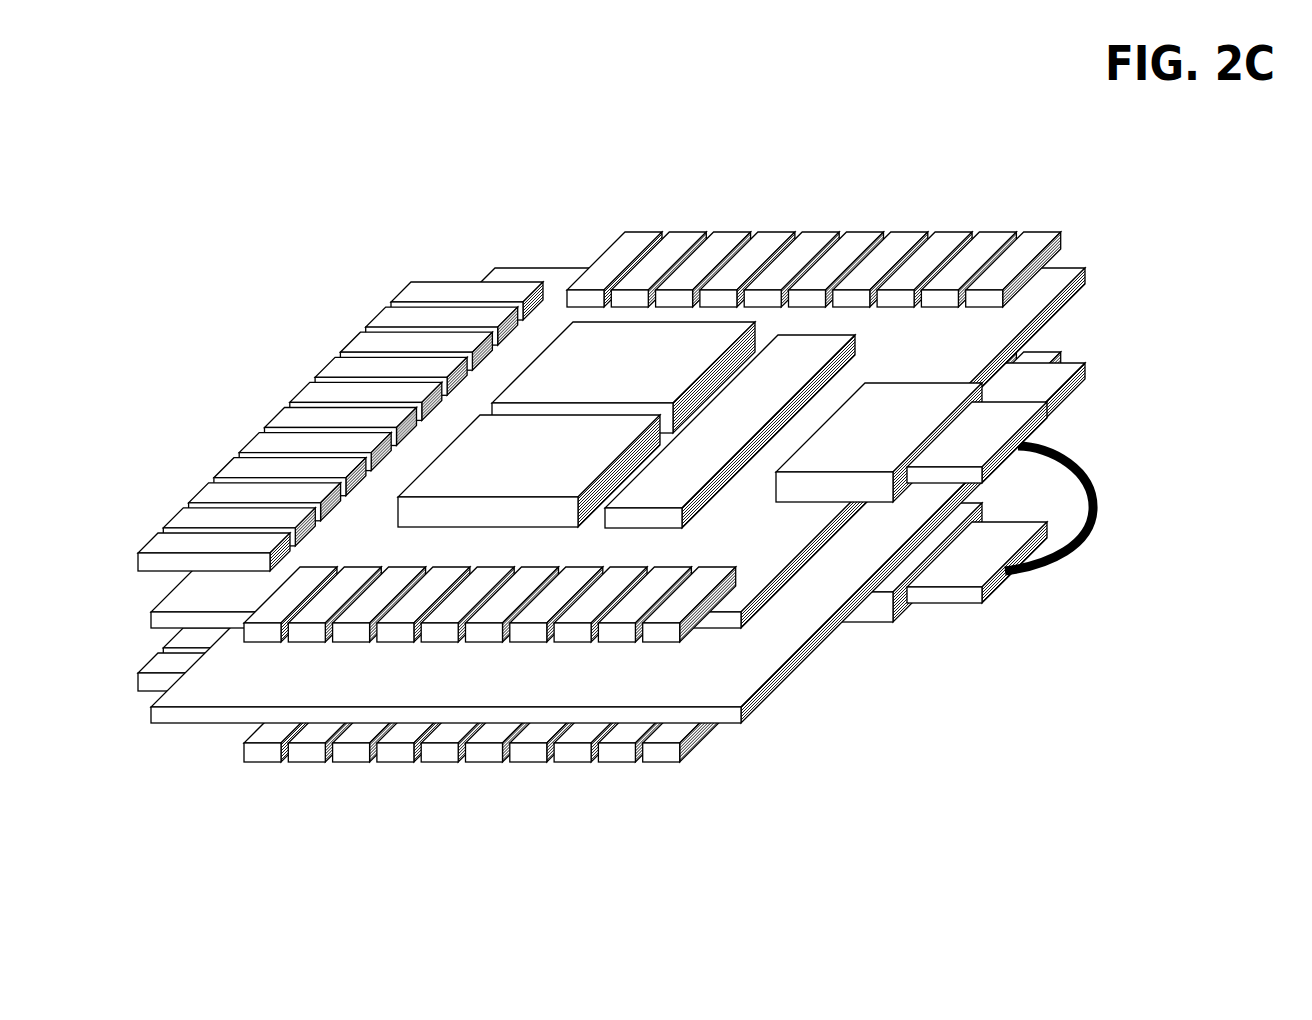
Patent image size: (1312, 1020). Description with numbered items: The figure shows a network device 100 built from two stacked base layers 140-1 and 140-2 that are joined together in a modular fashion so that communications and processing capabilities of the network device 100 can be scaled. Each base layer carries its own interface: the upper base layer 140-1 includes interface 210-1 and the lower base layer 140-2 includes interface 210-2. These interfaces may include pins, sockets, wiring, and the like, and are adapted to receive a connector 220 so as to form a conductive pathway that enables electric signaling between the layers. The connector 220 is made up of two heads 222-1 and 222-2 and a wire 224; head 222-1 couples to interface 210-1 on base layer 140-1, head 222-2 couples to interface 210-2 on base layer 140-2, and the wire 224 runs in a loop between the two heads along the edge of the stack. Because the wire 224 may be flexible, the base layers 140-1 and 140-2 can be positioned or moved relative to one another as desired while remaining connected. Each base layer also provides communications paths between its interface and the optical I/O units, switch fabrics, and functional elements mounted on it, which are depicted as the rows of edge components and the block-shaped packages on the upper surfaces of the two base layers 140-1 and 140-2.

The network device 100 is at (393, 209).
The base layer 140-1 is at (1073, 265).
The base layer 140-2 is at (1087, 368).
The interface 210-1 is at (913, 429).
The interface 210-2 is at (897, 613).
The head 222-1 is at (1007, 439).
The head 222-2 is at (987, 592).
The connector 220 is at (1087, 434).
The wire 224 is at (1080, 547).